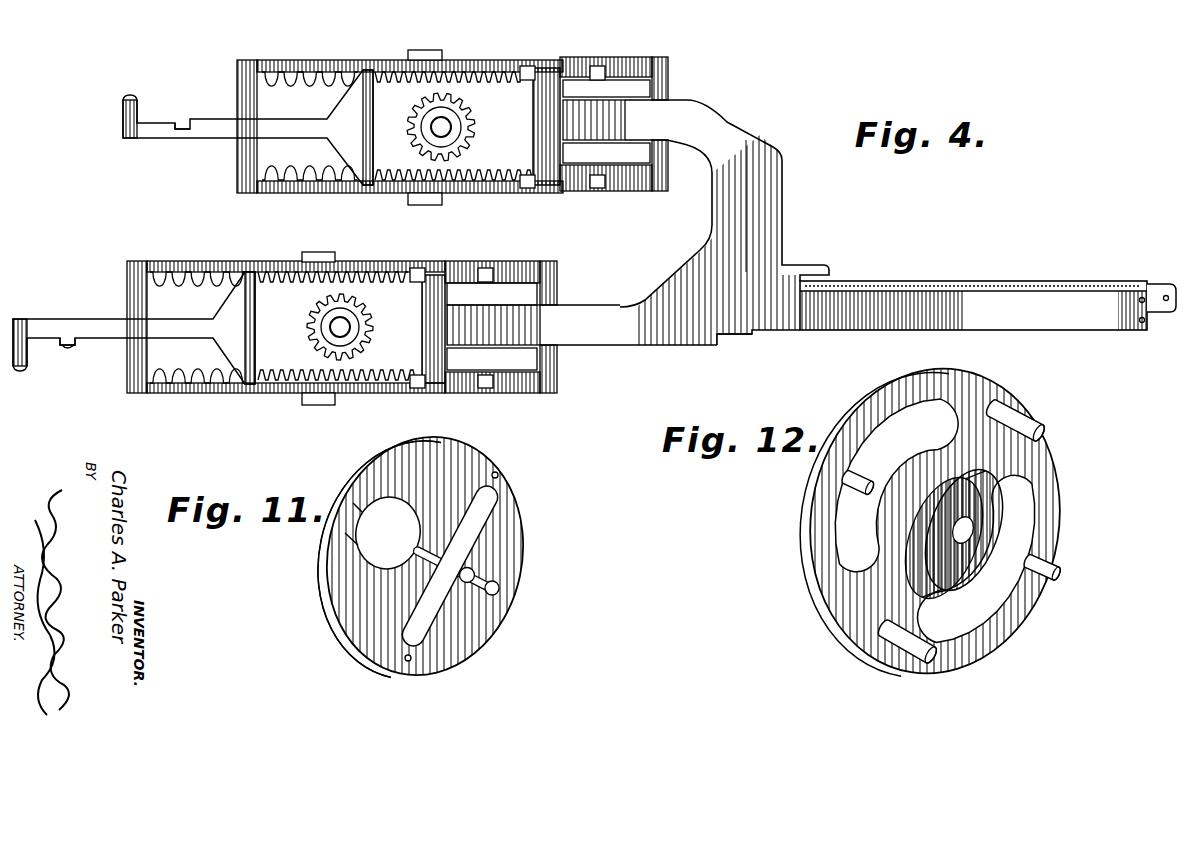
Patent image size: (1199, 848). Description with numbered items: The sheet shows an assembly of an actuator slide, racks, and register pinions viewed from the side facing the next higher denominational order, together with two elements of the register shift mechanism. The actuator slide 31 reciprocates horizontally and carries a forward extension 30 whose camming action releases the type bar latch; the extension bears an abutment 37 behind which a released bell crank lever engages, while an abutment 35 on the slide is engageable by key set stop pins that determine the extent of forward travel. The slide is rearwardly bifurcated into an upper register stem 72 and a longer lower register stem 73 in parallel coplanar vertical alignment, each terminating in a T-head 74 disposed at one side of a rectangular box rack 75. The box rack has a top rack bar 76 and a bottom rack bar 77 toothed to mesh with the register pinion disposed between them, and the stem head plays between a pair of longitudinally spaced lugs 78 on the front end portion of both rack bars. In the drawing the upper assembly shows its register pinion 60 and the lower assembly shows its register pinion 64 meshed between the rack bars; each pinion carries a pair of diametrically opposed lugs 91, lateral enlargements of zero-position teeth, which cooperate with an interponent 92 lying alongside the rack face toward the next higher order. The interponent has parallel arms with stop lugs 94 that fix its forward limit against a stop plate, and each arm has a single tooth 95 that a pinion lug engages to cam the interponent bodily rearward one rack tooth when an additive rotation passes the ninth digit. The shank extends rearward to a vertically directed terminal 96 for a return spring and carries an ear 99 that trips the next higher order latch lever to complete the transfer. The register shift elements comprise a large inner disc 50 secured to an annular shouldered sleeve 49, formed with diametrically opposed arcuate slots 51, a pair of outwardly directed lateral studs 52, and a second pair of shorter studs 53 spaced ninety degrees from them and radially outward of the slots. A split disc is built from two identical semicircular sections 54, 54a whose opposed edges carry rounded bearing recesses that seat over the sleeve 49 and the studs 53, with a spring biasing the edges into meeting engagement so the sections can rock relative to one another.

In FIG. 4, the extension 30 is at (962, 298).
In FIG. 4, the actuator slide 31 is at (778, 214).
In FIG. 4, the abutment 35 is at (742, 346).
In FIG. 4, the abutment 37 is at (1150, 283).
In FIG. 12, the annular shouldered sleeve 49 is at (983, 510).
In FIG. 12, the inner disc 50 is at (1055, 440).
In FIG. 12, the arcuate slots 51 is at (1008, 480).
In FIG. 12, the lateral studs 52 is at (1008, 410).
In FIG. 12, the studs 53 is at (844, 482).
In FIG. 11, the section 54 is at (512, 542).
In FIG. 11, the section 54a is at (333, 603).
In FIG. 4, the gear 60 is at (405, 127).
In FIG. 4, the gear 64 is at (305, 326).
In FIG. 4, the upper register stem 72 is at (637, 104).
In FIG. 4, the lower register stem 73 is at (600, 306).
In FIG. 4, the T-head 74 is at (533, 133).
In FIG. 4, the rectangular box rack 75 is at (677, 57).
In FIG. 4, the top rack bar 76 is at (312, 63).
In FIG. 4, the bottom rack bar 77 is at (313, 192).
In FIG. 4, the lugs 78 is at (527, 66).
In FIG. 4, the lugs 91 is at (470, 110).
In FIG. 4, the interponent 92 is at (219, 139).
In FIG. 4, the stop lugs 94 is at (426, 50).
In FIG. 4, the single tooth 95 is at (448, 72).
In FIG. 4, the terminal 96 is at (123, 108).
In FIG. 4, the ear 99 is at (181, 123).